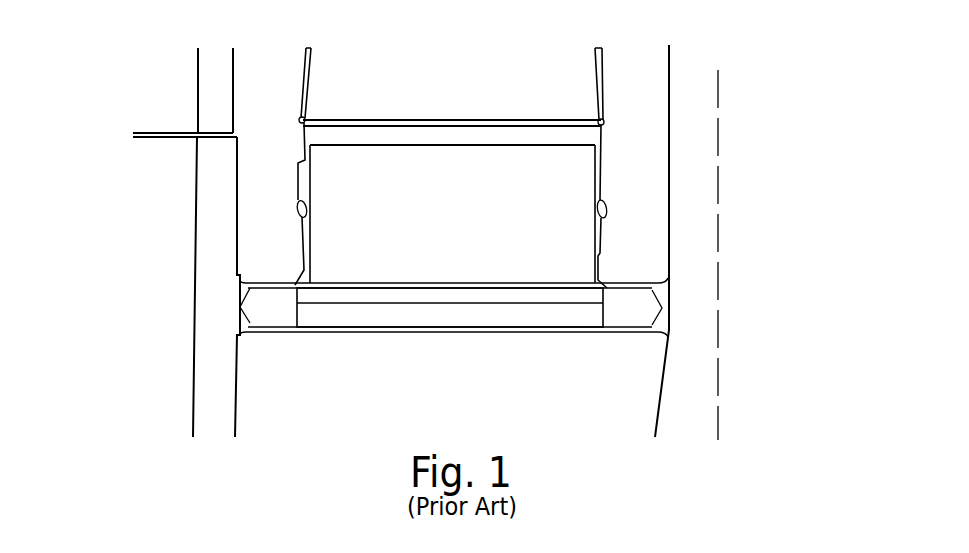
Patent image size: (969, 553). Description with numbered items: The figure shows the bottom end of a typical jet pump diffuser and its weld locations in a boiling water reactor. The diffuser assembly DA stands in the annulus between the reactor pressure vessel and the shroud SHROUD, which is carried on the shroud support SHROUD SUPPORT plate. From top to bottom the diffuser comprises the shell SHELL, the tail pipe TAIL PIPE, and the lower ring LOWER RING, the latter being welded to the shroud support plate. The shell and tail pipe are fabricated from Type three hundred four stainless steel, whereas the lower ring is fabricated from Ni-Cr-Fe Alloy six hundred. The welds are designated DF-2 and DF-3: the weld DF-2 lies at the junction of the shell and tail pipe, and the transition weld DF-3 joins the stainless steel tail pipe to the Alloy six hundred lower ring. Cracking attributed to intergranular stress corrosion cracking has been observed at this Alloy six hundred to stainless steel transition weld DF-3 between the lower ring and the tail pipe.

The shroud SHROUD is at (195, 95).
The shroud support plate SHROUD SUPPORT is at (220, 270).
The shell SHELL is at (603, 82).
The weld DF-2 is at (307, 117).
The weld DF-3 is at (312, 202).
The tail pipe TAIL PIPE is at (603, 157).
The diffuser lower ring LOWER RING is at (607, 248).
The diffuser assembly DA is at (498, 77).